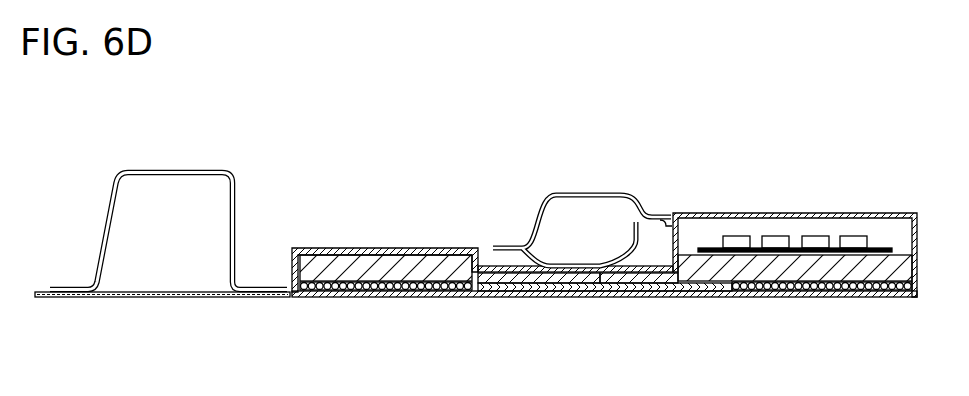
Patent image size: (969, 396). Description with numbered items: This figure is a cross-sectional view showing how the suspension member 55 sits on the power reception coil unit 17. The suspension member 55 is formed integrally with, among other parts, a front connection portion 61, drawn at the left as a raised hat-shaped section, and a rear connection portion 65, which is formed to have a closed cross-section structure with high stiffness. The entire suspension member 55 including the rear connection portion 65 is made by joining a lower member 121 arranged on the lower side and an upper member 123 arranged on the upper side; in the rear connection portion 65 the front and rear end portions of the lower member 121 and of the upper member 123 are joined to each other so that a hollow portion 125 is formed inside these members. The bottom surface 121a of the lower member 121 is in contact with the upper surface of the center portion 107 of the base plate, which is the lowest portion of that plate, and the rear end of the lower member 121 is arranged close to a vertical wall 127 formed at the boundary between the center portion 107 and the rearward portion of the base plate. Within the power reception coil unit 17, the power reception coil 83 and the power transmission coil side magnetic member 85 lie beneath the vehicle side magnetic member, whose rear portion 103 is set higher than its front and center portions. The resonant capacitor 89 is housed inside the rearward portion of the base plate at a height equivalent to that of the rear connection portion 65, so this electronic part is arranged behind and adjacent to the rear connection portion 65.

The power reception coil unit 17 is at (860, 204).
The suspension member 55 is at (151, 307).
The front connection portion 61 is at (176, 170).
The rear connection portion 65 is at (587, 185).
The power reception coil 83 is at (818, 296).
The power transmission coil side magnetic member 85 is at (699, 296).
The resonant capacitor 89 is at (819, 236).
The rear portion 103 is at (867, 296).
The center portion 107 is at (490, 263).
The lower member 121 is at (637, 283).
The bottom surface 121a is at (572, 283).
The upper member 123 is at (621, 192).
The hollow portion 125 is at (546, 286).
The vertical wall 127 is at (662, 222).